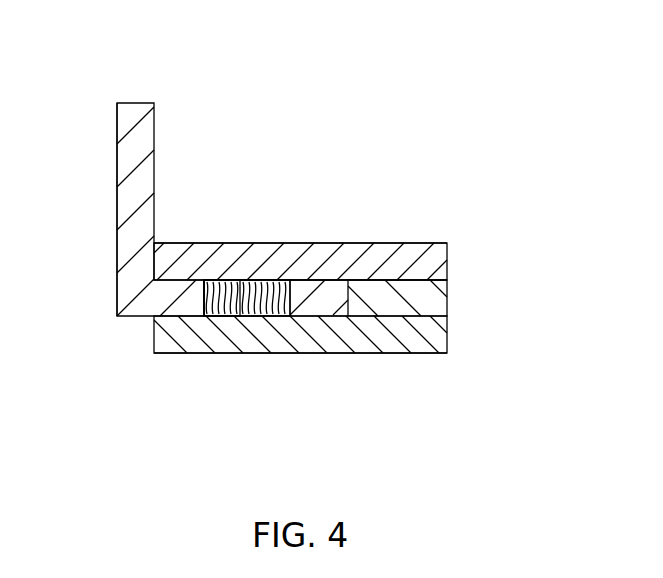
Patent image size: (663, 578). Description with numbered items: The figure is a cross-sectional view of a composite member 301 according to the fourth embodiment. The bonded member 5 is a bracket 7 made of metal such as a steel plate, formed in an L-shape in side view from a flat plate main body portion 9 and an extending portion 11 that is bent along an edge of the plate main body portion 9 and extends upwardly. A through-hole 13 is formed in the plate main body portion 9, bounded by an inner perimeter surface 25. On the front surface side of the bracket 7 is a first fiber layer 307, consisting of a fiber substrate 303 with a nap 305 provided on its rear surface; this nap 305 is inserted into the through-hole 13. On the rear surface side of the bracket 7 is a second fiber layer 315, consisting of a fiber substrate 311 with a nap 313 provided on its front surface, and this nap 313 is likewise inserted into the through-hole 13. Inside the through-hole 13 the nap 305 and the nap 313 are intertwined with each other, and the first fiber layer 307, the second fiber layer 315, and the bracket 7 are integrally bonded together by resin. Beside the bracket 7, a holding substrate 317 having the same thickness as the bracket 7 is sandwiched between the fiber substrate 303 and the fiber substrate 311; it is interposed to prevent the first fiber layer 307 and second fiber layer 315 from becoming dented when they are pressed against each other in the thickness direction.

The composite member 301 is at (373, 113).
The bracket 7 is at (163, 132).
The bonded member 5 is at (156, 209).
The extending portion 11 is at (118, 200).
The fiber substrate 303 is at (448, 247).
The first fiber layer 307 is at (298, 233).
The holding substrate 317 is at (448, 292).
The plate main body portion 9 is at (327, 290).
The nap 313 is at (242, 313).
The inner perimeter surface 25 is at (208, 293).
The through-hole 13 is at (197, 346).
The nap 305 is at (247, 283).
The fiber substrate 311 is at (448, 333).
The second fiber layer 315 is at (332, 364).